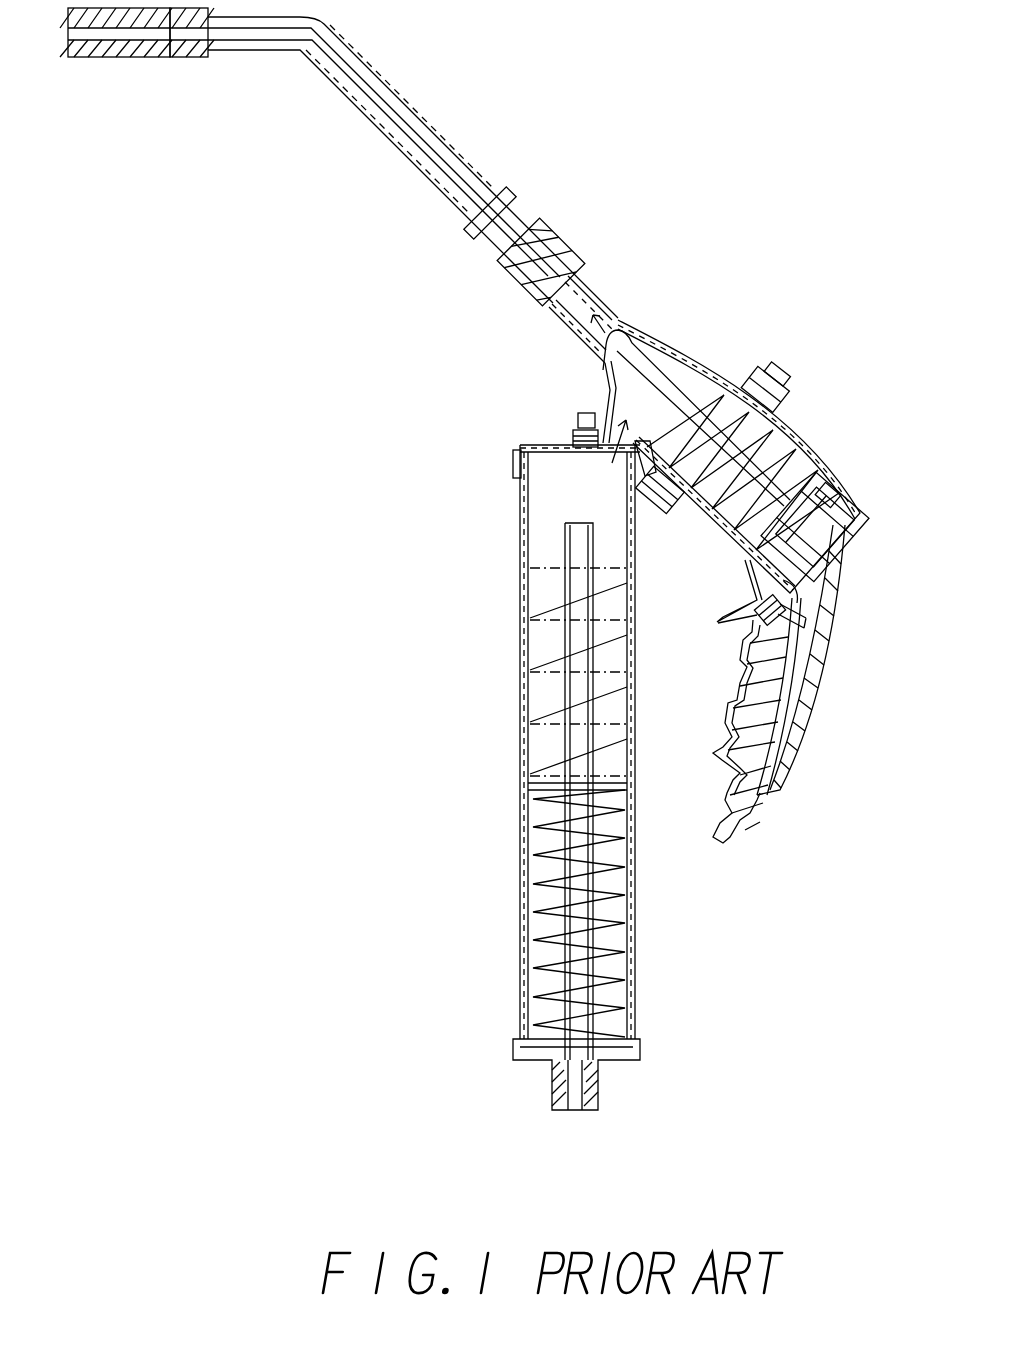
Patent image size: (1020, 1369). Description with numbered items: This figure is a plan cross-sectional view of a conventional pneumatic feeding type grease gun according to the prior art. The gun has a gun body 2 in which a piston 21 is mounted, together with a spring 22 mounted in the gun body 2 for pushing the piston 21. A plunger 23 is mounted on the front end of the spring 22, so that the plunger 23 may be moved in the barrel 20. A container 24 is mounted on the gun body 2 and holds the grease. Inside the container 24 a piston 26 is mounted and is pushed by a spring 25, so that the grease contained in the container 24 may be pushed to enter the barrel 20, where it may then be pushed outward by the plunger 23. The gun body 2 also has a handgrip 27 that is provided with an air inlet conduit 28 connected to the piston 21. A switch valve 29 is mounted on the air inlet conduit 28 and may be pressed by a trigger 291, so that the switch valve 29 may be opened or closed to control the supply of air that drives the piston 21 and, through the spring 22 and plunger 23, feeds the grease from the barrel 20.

The gun body 2 is at (761, 427).
The barrel 20 is at (577, 292).
The piston 21 is at (847, 503).
The spring 22 is at (790, 473).
The plunger 23 is at (643, 350).
The container 24 is at (520, 858).
The spring 25 is at (547, 943).
The piston 26 is at (543, 757).
The handgrip 27 is at (795, 695).
The air inlet conduit 28 is at (820, 597).
The switch valve 29 is at (753, 642).
The trigger 291 is at (727, 603).